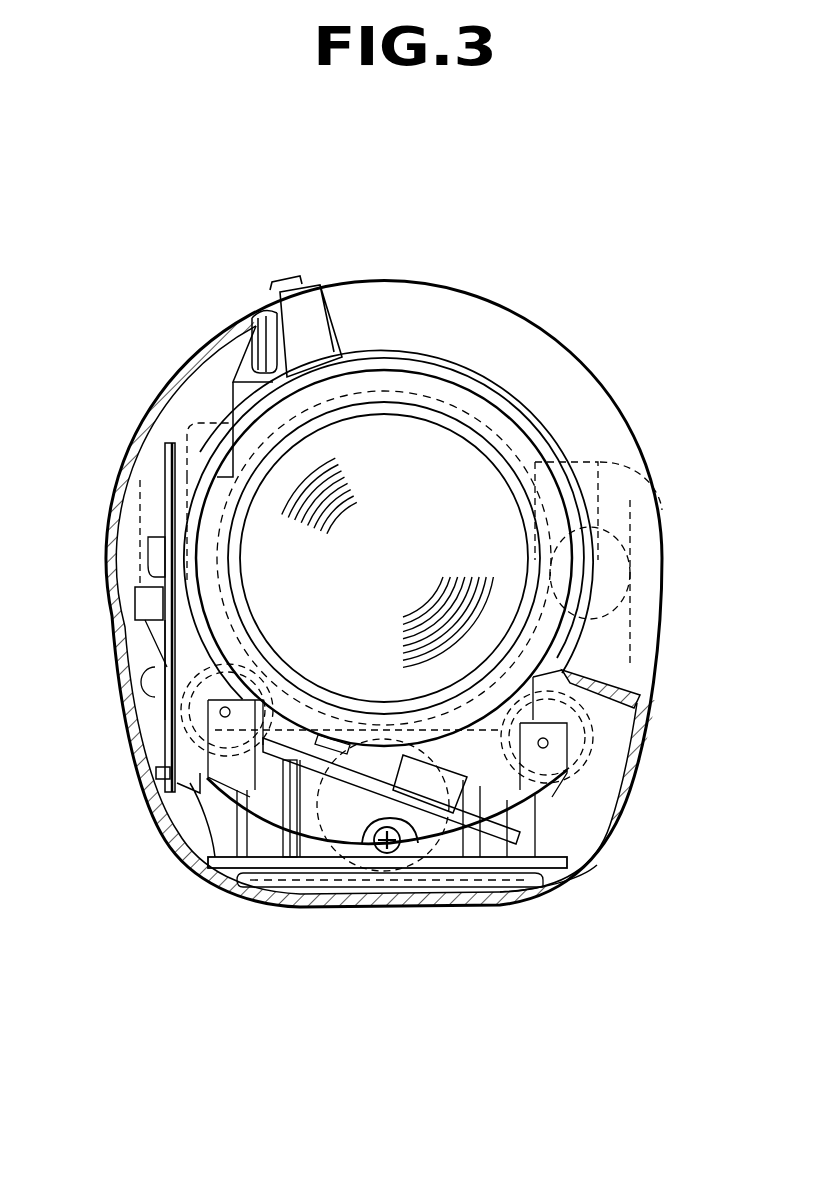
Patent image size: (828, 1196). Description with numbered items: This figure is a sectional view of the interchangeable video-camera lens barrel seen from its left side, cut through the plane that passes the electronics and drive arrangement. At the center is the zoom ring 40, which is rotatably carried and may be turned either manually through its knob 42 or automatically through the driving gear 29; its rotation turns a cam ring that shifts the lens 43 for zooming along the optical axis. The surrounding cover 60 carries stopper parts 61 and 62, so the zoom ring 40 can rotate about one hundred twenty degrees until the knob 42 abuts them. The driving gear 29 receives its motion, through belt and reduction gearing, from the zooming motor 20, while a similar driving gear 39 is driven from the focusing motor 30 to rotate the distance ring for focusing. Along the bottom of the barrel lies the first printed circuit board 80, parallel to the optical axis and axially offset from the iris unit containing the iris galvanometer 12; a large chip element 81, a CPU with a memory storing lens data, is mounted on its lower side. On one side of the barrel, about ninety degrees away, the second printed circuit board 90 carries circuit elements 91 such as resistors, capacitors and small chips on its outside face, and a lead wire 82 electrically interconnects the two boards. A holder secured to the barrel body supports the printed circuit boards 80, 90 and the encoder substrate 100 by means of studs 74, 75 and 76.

The iris galvanometer 12 is at (426, 890).
The zooming motor 20 is at (600, 478).
The driving gear 29 is at (638, 747).
The focusing motor 30 is at (200, 495).
The driving gear 39 is at (183, 715).
The zoom ring 40 is at (412, 365).
The knob 42 is at (316, 322).
The lens 43 is at (438, 450).
The cover 60 is at (603, 850).
The stopper part 61 is at (272, 328).
The stopper part 62 is at (620, 675).
The stud 74 is at (288, 842).
The stud 75 is at (527, 827).
The stud 76 is at (205, 797).
The first printed circuit board 80 is at (545, 885).
The large chip element 81 is at (410, 868).
The lead wire 82 is at (196, 782).
The second printed circuit board 90 is at (163, 633).
The circuit element 91 is at (148, 597).
The encoder substrate 100 is at (370, 845).